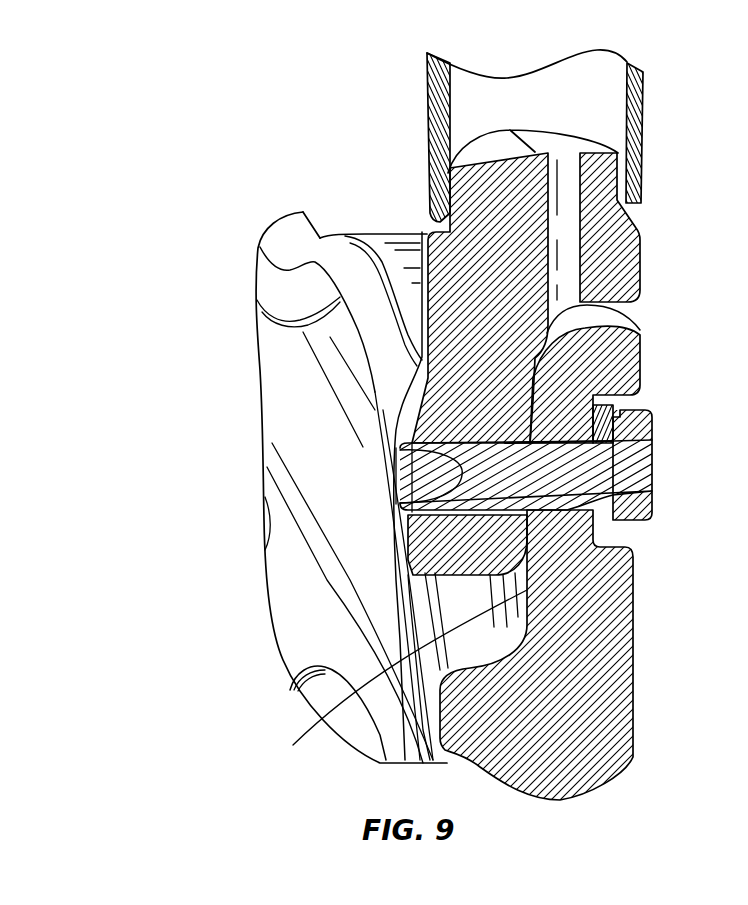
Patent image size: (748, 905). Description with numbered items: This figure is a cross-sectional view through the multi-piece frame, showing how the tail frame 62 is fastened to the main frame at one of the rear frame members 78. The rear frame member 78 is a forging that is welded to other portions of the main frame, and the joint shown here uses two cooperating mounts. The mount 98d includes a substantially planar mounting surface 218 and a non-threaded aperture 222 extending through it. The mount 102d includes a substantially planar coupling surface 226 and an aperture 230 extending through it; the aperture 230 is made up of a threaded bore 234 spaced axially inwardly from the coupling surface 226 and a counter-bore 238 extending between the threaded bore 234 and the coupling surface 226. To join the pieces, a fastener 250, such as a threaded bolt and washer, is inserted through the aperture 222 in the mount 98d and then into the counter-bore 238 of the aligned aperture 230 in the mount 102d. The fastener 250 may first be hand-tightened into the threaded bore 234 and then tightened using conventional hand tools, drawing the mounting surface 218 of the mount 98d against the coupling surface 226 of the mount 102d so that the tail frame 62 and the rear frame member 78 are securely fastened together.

The tail frame 62 is at (643, 108).
The mount 102d is at (443, 383).
The coupling surface 226 is at (593, 403).
The fastener 250 is at (640, 436).
The aperture 222 is at (593, 487).
The aperture 230 is at (405, 475).
The threaded bore 234 is at (405, 483).
The counter-bore 238 is at (460, 455).
The rear frame member 78 is at (367, 582).
The mounting surface 218 is at (300, 738).
The mount 98d is at (607, 689).